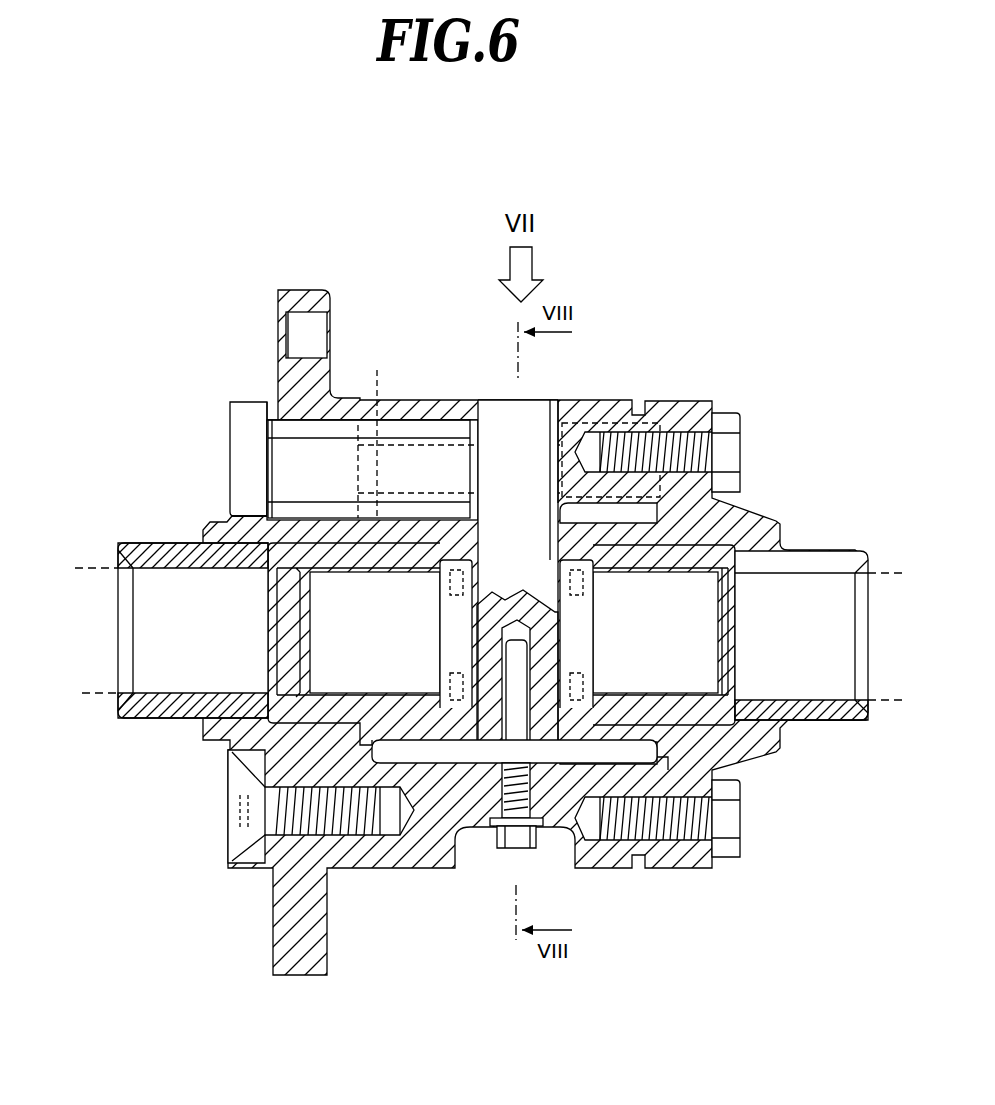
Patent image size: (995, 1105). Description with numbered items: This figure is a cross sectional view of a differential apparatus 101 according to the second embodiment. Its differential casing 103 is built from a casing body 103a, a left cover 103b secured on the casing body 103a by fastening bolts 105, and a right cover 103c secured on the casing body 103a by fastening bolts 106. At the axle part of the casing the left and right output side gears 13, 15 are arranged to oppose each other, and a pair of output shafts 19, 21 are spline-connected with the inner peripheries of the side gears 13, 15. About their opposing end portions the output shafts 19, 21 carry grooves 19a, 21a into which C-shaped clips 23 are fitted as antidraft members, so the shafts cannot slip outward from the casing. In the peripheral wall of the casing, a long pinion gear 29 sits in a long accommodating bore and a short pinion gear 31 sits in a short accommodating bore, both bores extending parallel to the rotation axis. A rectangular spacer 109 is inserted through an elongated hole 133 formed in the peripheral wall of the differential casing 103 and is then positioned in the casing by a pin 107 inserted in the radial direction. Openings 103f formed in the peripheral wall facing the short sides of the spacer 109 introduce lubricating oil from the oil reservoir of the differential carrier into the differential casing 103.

The differential apparatus 101 is at (642, 302).
The differential casing 103 is at (338, 281).
The casing body 103a is at (358, 398).
The left cover 103b is at (230, 440).
The right cover 103c is at (690, 400).
The opening 103f is at (600, 402).
The fastening bolt 105 is at (228, 808).
The fastening bolt 106 is at (740, 440).
The pin 107 is at (510, 848).
The spacer 109 is at (545, 476).
The elongated hole 133 is at (545, 400).
The left output side gear 13 is at (370, 560).
The right output side gear 15 is at (680, 553).
The output shaft 19 is at (118, 693).
The groove 19a is at (447, 603).
The output shaft 21 is at (868, 700).
The groove 21a is at (593, 600).
The C-shaped clip 23 is at (450, 672).
The long pinion gear 29 is at (378, 420).
The short pinion gear 31 is at (420, 400).